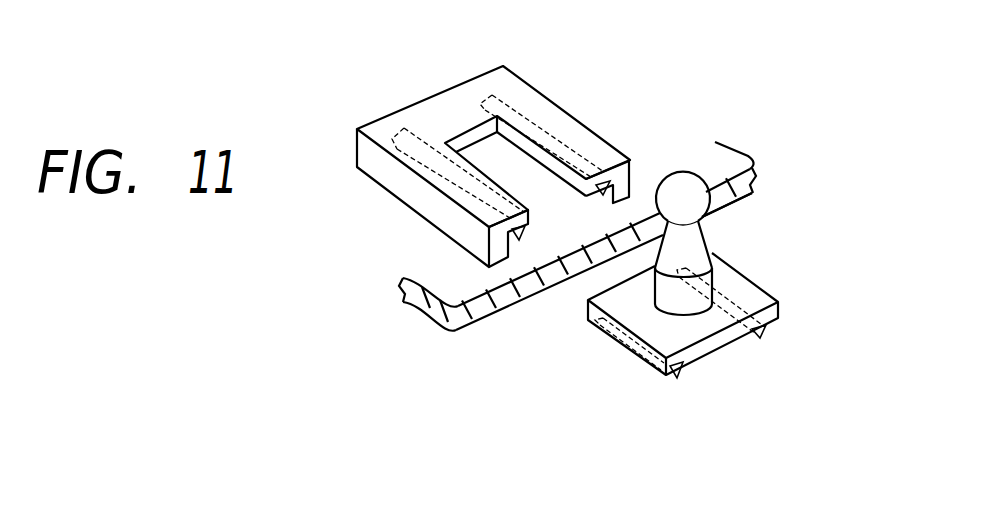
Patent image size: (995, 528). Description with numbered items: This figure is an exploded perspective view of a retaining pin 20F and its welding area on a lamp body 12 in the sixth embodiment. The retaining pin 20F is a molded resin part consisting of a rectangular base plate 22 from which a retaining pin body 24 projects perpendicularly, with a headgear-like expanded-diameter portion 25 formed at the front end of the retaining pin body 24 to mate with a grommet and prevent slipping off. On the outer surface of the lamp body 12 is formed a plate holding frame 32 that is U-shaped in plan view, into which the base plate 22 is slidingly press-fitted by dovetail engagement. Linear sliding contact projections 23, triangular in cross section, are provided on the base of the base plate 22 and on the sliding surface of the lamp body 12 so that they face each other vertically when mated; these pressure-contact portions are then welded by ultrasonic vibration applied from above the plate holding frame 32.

The lamp body 12 is at (422, 318).
The retaining pin 20F is at (768, 150).
The base plate 22 is at (752, 282).
The sliding contact projection 23 is at (520, 238).
The retaining pin body 24 is at (722, 232).
The expanded-diameter portion 25 is at (674, 174).
The plate holding frame 32 is at (406, 91).